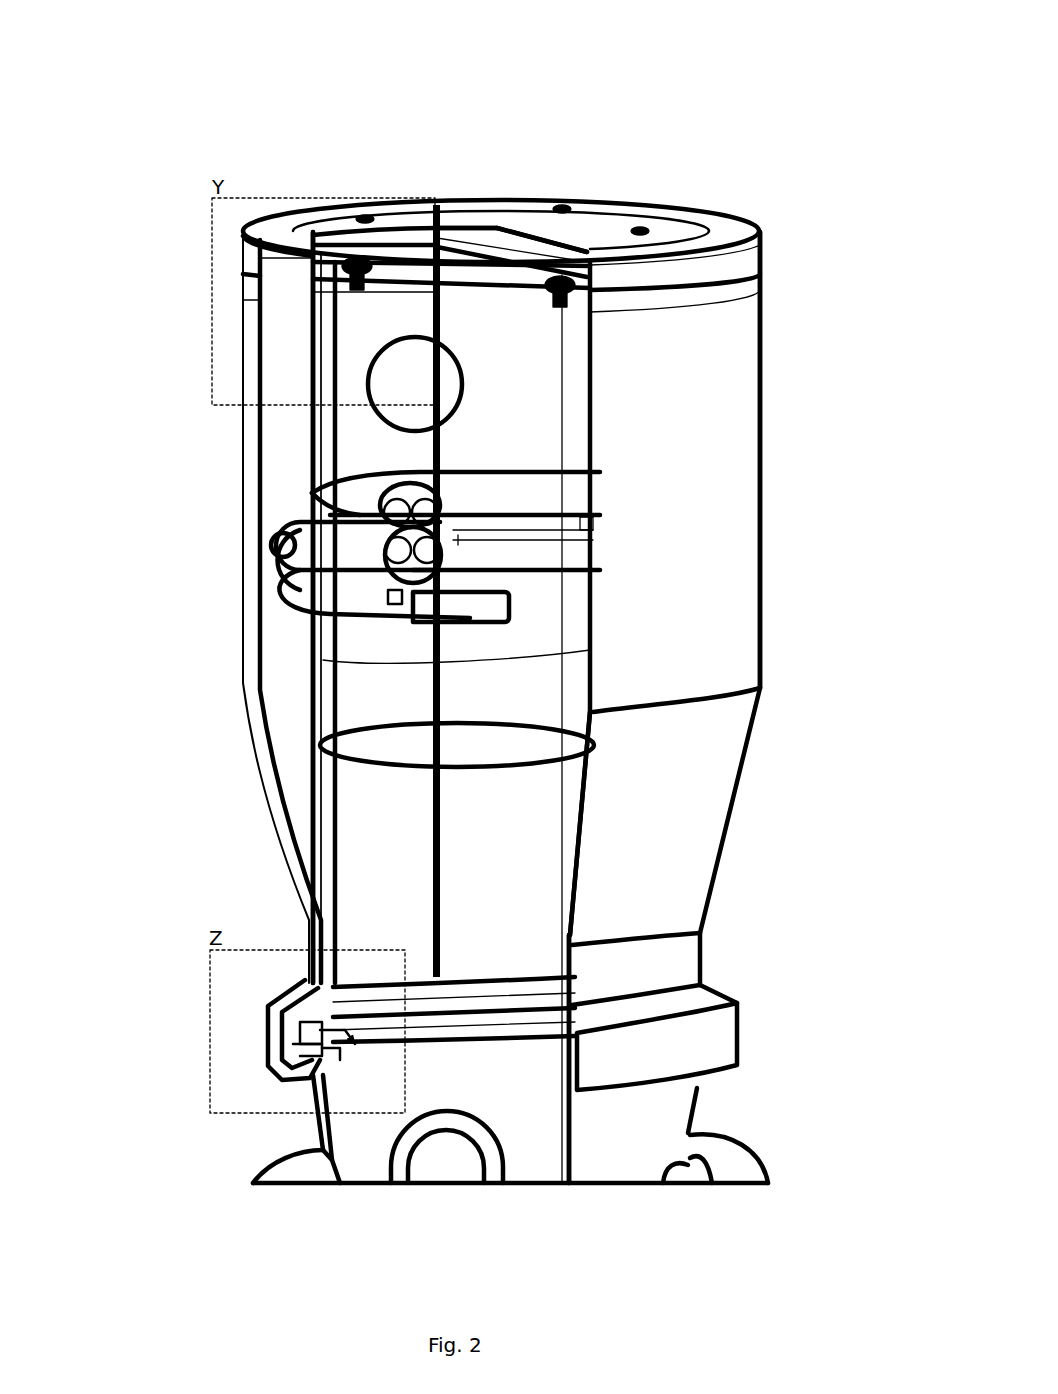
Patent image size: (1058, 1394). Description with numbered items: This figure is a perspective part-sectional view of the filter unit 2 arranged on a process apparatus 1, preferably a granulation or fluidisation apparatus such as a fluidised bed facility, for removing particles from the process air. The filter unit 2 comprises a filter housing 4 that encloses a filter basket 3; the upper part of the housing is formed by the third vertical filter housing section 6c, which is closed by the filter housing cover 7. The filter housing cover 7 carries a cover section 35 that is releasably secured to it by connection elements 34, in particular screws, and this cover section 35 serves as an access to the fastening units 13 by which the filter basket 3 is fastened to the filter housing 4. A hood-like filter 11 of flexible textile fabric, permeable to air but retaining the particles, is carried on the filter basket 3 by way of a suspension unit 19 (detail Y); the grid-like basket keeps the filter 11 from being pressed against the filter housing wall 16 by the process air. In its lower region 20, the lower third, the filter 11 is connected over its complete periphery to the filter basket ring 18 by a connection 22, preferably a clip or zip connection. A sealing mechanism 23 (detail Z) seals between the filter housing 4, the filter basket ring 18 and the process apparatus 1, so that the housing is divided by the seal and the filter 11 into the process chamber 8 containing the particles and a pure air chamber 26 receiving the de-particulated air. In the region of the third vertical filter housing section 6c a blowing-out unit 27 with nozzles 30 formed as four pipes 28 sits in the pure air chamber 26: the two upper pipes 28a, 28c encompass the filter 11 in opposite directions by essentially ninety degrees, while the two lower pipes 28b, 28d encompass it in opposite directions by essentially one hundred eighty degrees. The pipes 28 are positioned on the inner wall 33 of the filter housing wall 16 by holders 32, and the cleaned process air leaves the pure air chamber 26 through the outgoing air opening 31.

The process apparatus 1 is at (714, 1115).
The filter unit 2 is at (175, 103).
The filter basket 3 is at (310, 268).
The filter housing 4 is at (822, 410).
The third vertical filter housing section 6c is at (772, 328).
The filter housing cover 7 is at (727, 230).
The process chamber 8 is at (454, 1031).
The hood-like filter 11 is at (565, 688).
The fastening unit 13 is at (320, 232).
The filter housing wall 16 is at (250, 432).
The filter basket ring 18 is at (333, 1040).
The suspension unit 19 is at (360, 302).
The lower region 20 is at (268, 965).
The connection 22 is at (352, 1045).
The sealing mechanism 23 is at (262, 1038).
The pure air chamber 26 is at (427, 705).
The blowing-out unit 27 is at (306, 626).
The pipes 28 is at (522, 582).
The upper pipe 28a is at (296, 545).
The lower pipe 28b is at (290, 595).
The upper pipe 28c is at (580, 492).
The lower pipe 28d is at (548, 555).
The nozzles 30 is at (358, 527).
The outgoing air opening 31 is at (458, 345).
The holders 32 is at (590, 522).
The inner wall 33 is at (268, 297).
The connection elements 34 is at (380, 205).
The cover section 35 is at (465, 200).